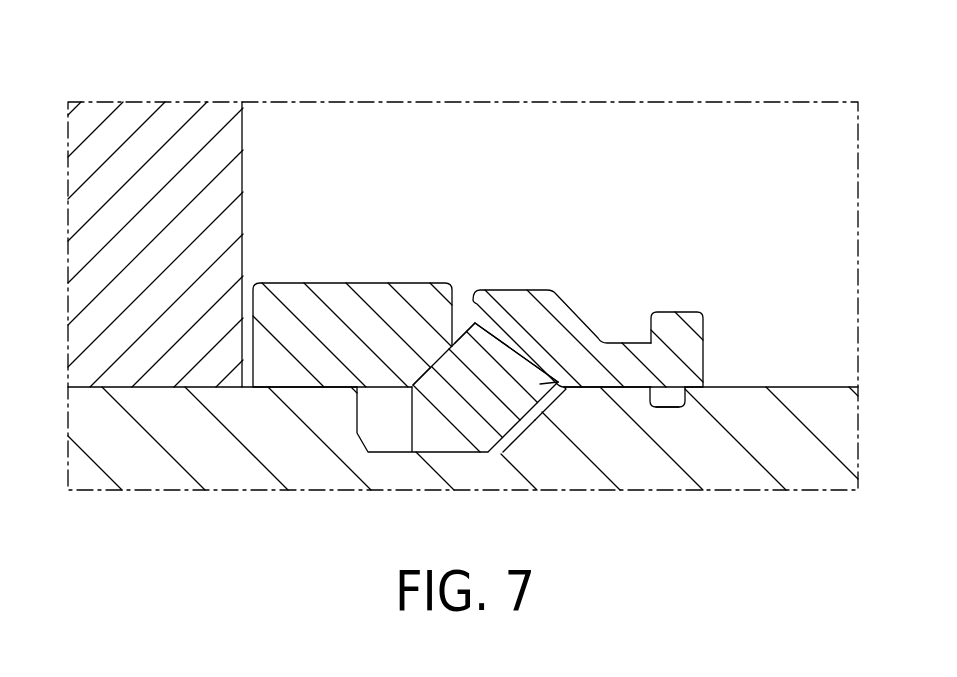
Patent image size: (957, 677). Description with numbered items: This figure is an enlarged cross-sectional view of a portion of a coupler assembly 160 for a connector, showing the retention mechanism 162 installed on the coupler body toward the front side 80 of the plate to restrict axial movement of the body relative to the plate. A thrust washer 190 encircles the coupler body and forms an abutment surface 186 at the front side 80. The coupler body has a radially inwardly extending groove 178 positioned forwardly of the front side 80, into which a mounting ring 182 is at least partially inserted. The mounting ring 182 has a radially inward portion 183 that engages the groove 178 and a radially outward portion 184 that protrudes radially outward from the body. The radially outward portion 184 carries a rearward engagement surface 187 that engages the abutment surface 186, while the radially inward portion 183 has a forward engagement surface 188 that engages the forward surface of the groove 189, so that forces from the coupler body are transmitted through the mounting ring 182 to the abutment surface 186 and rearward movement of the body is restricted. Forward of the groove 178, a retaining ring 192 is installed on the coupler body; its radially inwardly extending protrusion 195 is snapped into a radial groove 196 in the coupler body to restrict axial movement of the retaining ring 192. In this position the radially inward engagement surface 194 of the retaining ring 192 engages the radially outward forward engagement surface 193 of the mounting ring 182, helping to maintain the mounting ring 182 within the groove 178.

The coupler assembly 160 is at (290, 87).
The front side of the plate 80 is at (243, 168).
The retention mechanism 162 is at (527, 190).
The thrust washer 190 is at (293, 297).
The abutment surface 186 is at (425, 375).
The rearward engagement surface 187 is at (452, 352).
The mounting ring 182 is at (498, 378).
The radially outward portion 184 is at (512, 302).
The radially outward forward engagement surface 193 is at (551, 368).
The radially inward engagement surface 194 is at (548, 378).
The retaining ring 192 is at (658, 358).
The radially inwardly extending protrusion 195 is at (668, 400).
The radial groove 196 is at (670, 404).
The groove 178 is at (455, 452).
The radially inward portion 183 is at (476, 434).
The forward surface of the groove 189 is at (538, 448).
The forward engagement surface 188 is at (552, 411).